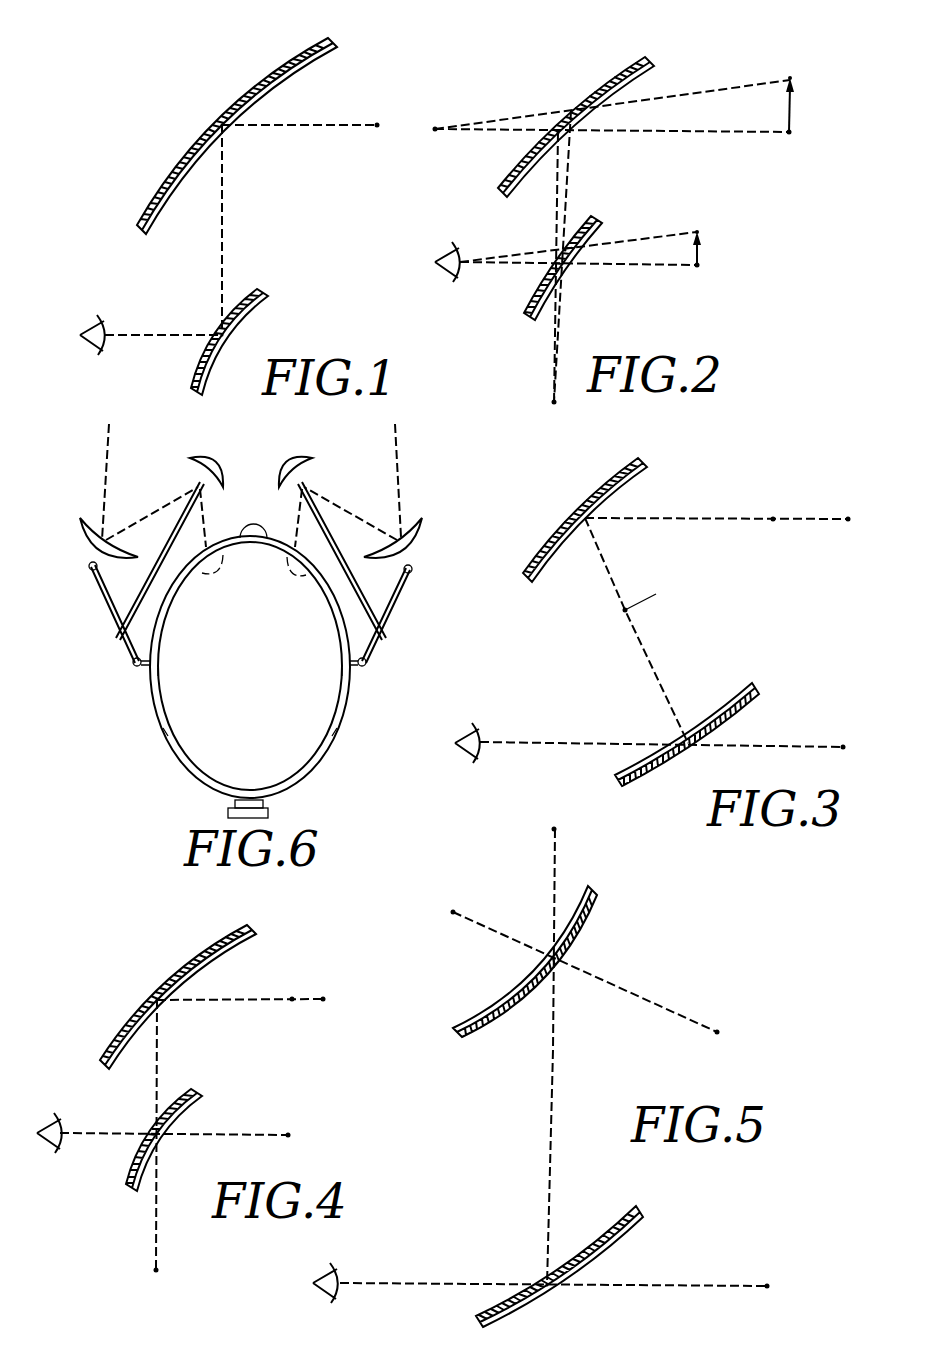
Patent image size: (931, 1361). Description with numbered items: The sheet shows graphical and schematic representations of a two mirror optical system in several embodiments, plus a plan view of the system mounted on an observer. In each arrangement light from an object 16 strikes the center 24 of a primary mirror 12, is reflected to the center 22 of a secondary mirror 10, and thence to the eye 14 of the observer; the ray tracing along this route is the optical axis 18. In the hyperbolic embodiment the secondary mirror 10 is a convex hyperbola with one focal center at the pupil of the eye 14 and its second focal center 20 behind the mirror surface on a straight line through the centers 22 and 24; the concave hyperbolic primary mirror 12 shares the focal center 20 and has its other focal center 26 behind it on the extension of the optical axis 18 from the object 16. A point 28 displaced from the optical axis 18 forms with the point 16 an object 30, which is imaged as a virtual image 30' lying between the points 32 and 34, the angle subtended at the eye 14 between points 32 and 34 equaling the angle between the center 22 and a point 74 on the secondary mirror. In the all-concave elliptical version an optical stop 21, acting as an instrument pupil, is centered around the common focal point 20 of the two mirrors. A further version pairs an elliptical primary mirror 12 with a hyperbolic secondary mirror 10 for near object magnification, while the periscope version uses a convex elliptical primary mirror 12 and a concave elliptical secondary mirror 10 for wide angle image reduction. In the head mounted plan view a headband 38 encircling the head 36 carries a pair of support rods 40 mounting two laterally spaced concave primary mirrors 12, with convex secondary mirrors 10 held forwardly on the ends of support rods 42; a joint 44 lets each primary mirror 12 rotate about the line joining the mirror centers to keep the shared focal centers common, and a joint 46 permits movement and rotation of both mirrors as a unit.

In FIG. 1, the secondary mirror 10 is at (264, 297).
In FIG. 2, the secondary mirror 10 is at (533, 318).
In FIG. 3, the secondary mirror 10 is at (755, 699).
In FIG. 6, the secondary mirror 10 is at (300, 471).
In FIG. 4, the secondary mirror 10 is at (130, 1190).
In FIG. 5, the secondary mirror 10 is at (636, 1217).
In FIG. 1, the primary mirror 12 is at (151, 206).
In FIG. 2, the primary mirror 12 is at (516, 156).
In FIG. 3, the primary mirror 12 is at (603, 483).
In FIG. 6, the primary mirror 12 is at (84, 530).
In FIG. 4, the primary mirror 12 is at (128, 1004).
In FIG. 5, the primary mirror 12 is at (485, 1022).
In FIG. 1, the eye 14 is at (85, 320).
In FIG. 2, the eye 14 is at (440, 250).
In FIG. 3, the eye 14 is at (473, 727).
In FIG. 4, the eye 14 is at (42, 1122).
In FIG. 5, the eye 14 is at (330, 1270).
In FIG. 1, the object 16 is at (377, 130).
In FIG. 2, the object 16 is at (792, 135).
In FIG. 3, the object 16 is at (773, 523).
In FIG. 4, the object 16 is at (294, 1003).
In FIG. 5, the object 16 is at (719, 1030).
In FIG. 1, the optical axis 18 is at (291, 124).
In FIG. 2, the optical axis 18 is at (667, 135).
In FIG. 2, the focal center 20 is at (554, 402).
In FIG. 3, the focal center 20 is at (630, 612).
In FIG. 4, the focal center 20 is at (155, 1271).
In FIG. 5, the focal center 20 is at (555, 826).
In FIG. 3, the optical stop 21 is at (620, 614).
In FIG. 1, the center of secondary mirror 22 is at (220, 333).
In FIG. 2, the center of secondary mirror 22 is at (560, 265).
In FIG. 4, the center of secondary mirror 22 is at (155, 1131).
In FIG. 5, the center of secondary mirror 22 is at (545, 1283).
In FIG. 1, the center of primary mirror 24 is at (225, 127).
In FIG. 2, the center of primary mirror 24 is at (562, 137).
In FIG. 4, the center of primary mirror 24 is at (160, 1003).
In FIG. 5, the center of primary mirror 24 is at (547, 957).
In FIG. 2, the focal center 26 is at (434, 126).
In FIG. 3, the focal center 26 is at (848, 523).
In FIG. 4, the focal center 26 is at (326, 1002).
In FIG. 5, the focal center 26 is at (451, 913).
In FIG. 2, the displaced point 28 is at (796, 72).
In FIG. 2, the object 30 is at (813, 105).
In FIG. 2, the virtual image 30' is at (727, 250).
In FIG. 2, the image point 32 is at (698, 267).
In FIG. 3, the image point 32 is at (844, 744).
In FIG. 4, the image point 32 is at (290, 1137).
In FIG. 5, the image point 32 is at (768, 1284).
In FIG. 2, the image point 34 is at (698, 228).
In FIG. 6, the head 36 is at (207, 763).
In FIG. 6, the headband 38 is at (157, 727).
In FIG. 6, the support rods 40 is at (116, 634).
In FIG. 6, the support rods 42 is at (167, 532).
In FIG. 6, the joint 44 is at (88, 565).
In FIG. 6, the joint 46 is at (133, 668).
In FIG. 2, the point on secondary mirror 74 is at (568, 252).